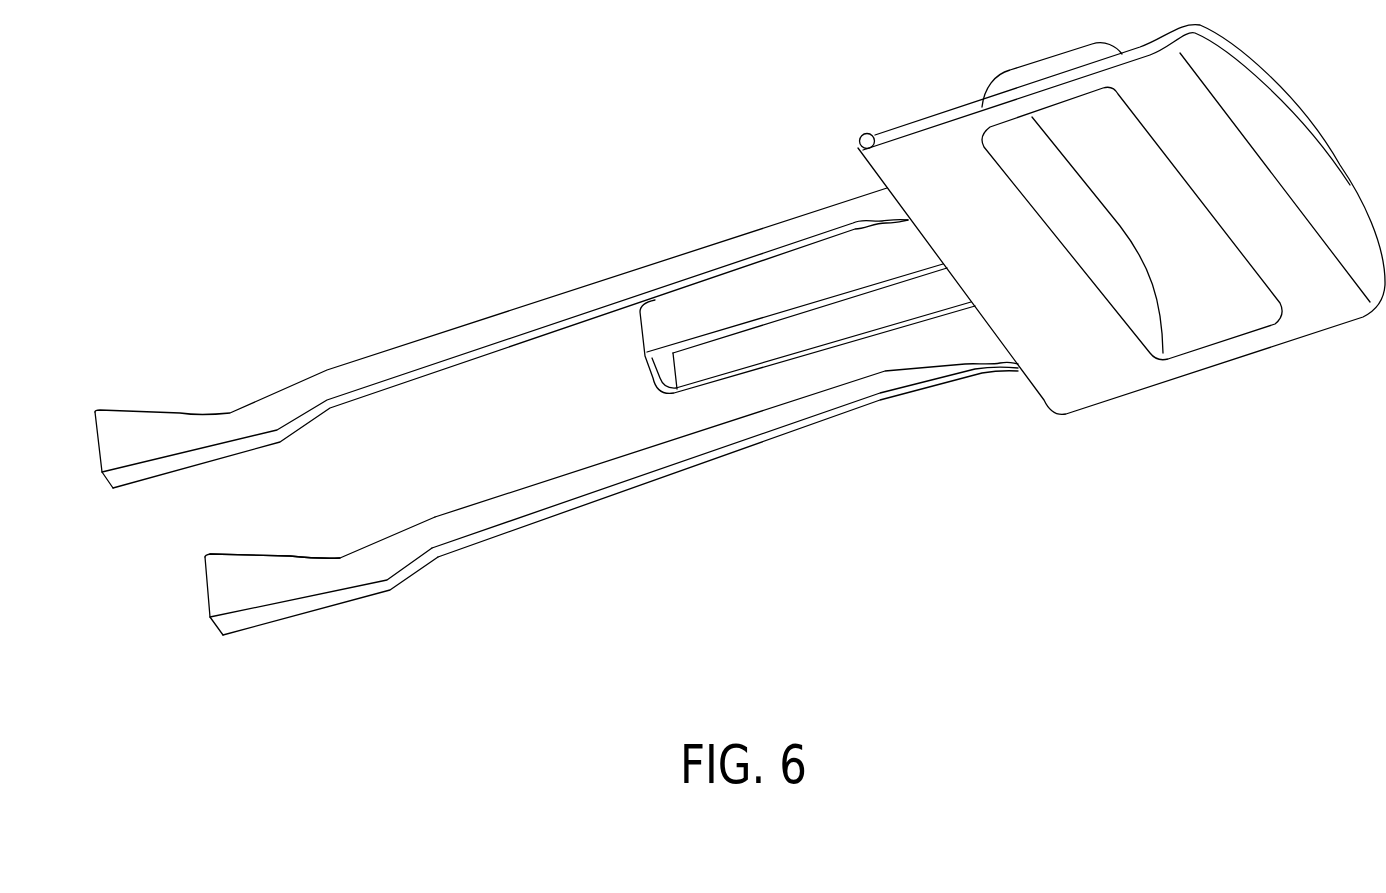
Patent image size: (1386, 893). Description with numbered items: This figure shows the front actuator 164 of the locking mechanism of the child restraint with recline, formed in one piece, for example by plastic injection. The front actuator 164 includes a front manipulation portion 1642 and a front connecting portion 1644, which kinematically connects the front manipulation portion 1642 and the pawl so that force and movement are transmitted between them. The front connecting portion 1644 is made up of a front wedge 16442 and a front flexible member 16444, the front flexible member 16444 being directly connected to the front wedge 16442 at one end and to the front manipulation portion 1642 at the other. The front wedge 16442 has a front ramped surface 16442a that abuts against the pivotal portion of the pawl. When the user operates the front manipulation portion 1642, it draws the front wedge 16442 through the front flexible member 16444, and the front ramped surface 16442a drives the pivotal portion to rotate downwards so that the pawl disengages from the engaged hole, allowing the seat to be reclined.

The front actuator 164 is at (457, 123).
The front manipulation portion 1642 is at (1222, 313).
The front connecting portion 1644 is at (558, 623).
The front wedge 16442 is at (300, 582).
The front ramped surface 16442a is at (273, 557).
The front flexible member 16444 is at (490, 513).